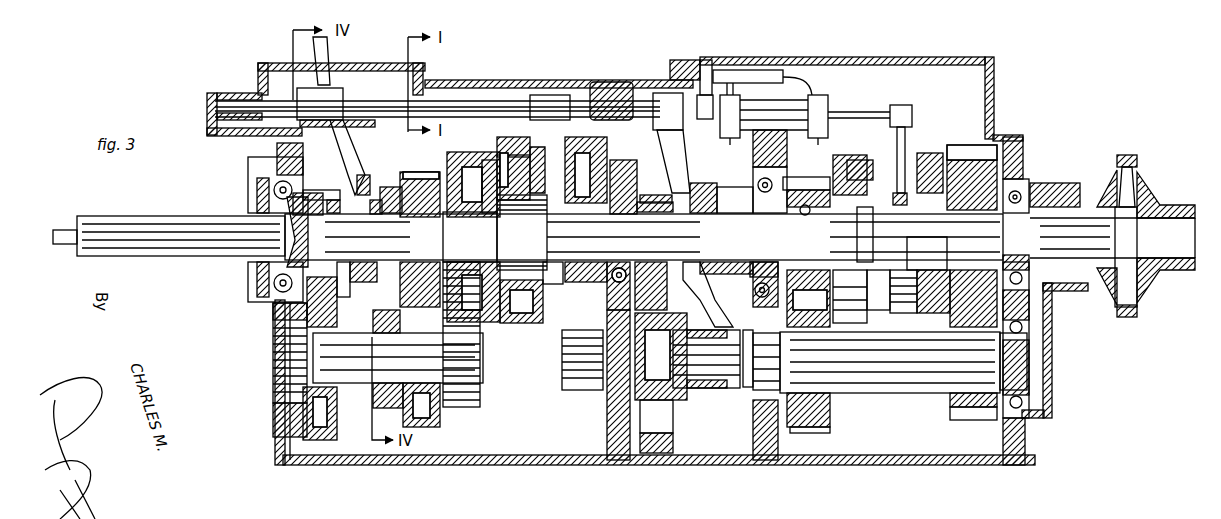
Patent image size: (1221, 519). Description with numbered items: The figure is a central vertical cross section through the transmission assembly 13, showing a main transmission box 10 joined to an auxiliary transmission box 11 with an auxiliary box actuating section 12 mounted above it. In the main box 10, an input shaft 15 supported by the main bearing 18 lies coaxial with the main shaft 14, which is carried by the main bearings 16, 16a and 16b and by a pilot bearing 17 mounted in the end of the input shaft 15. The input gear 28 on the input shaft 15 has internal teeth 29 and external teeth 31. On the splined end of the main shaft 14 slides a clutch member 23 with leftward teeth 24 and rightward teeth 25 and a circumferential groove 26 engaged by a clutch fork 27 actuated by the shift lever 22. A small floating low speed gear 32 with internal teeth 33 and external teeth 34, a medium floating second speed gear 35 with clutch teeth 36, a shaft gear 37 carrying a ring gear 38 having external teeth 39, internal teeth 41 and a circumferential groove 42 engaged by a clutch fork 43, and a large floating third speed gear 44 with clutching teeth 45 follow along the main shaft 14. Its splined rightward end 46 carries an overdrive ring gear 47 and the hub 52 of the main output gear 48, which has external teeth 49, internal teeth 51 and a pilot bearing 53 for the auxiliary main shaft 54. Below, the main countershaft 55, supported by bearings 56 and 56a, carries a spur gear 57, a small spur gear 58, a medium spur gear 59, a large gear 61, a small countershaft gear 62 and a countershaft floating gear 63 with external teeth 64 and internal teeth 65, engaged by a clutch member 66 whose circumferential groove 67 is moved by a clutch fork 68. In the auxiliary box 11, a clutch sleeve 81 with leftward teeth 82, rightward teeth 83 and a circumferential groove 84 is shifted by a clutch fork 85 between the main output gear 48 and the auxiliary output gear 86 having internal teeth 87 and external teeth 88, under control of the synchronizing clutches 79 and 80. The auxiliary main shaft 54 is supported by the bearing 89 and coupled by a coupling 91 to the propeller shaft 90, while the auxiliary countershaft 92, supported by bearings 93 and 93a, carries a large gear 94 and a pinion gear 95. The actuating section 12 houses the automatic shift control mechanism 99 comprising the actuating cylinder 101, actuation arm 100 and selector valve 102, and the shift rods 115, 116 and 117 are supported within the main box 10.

The main transmission box 10 is at (282, 460).
The auxiliary transmission box 11 is at (1025, 453).
The auxiliary box actuating section 12 is at (1003, 60).
The transmission assembly 13 is at (257, 382).
The main shaft 14 is at (644, 237).
The input shaft 15 is at (197, 260).
The main bearing 16 is at (623, 163).
The main bearing 16a is at (703, 183).
The main bearing 16b is at (772, 173).
The pilot bearing 17 is at (317, 193).
The main bearing 18 is at (263, 290).
The shift lever 22 is at (313, 48).
The clutch member 23 is at (353, 280).
The leftward teeth 24 is at (347, 278).
The rightward teeth 25 is at (377, 207).
The circumferential groove 26 is at (365, 270).
The clutch fork 27 is at (352, 153).
The input gear 28 is at (258, 198).
The internal teeth 29 is at (333, 200).
The external teeth 31 is at (312, 190).
The small floating low speed gear 32 is at (430, 167).
The internal teeth 33 is at (393, 193).
The external teeth 34 is at (413, 173).
The medium floating second speed gear 35 is at (463, 152).
The clutch teeth 36 is at (487, 270).
The shaft gear 37 is at (548, 220).
The ring gear 38 is at (500, 130).
The external teeth 39 is at (518, 143).
The internal teeth 41 is at (493, 180).
The circumferential groove 42 is at (528, 287).
The clutch fork 43 is at (535, 153).
The large floating third speed gear 44 is at (578, 132).
The clutching teeth 45 is at (553, 280).
The rightward end of main shaft 46 is at (723, 230).
The overdrive ring gear 47 is at (650, 197).
The main output gear 48 is at (822, 170).
The external teeth 49 is at (802, 183).
The internal teeth 51 is at (830, 290).
The hub 52 is at (720, 277).
The pilot bearing 53 is at (807, 195).
The auxiliary main shaft 54 is at (1093, 245).
The main countershaft 55 is at (362, 370).
The bearing 56 is at (287, 340).
The bearing 56a is at (613, 403).
The spur gear 57 is at (323, 430).
The small spur gear 58 is at (387, 393).
The medium spur gear 59 is at (418, 413).
The large gear 61 is at (462, 393).
The small countershaft gear 62 is at (573, 383).
The countershaft floating gear 63 is at (653, 452).
The external teeth 64 is at (667, 453).
The internal teeth 65 is at (697, 390).
The clutch member 66 is at (727, 393).
The circumferential groove 67 is at (720, 390).
The clutch fork 68 is at (668, 150).
The synchronizing clutch 79 is at (850, 320).
The synchronizing clutch 80 is at (933, 153).
The clutch sleeve 81 is at (887, 277).
The leftward teeth 82 is at (867, 177).
The rightward teeth 83 is at (943, 283).
The circumferential groove 84 is at (900, 270).
The clutch fork 85 is at (897, 133).
The auxiliary output gear 86 is at (975, 142).
The internal teeth 87 is at (953, 187).
The external teeth 88 is at (997, 137).
The bearing 89 is at (1028, 188).
The propeller shaft 90 is at (1177, 203).
The coupling 91 is at (1135, 153).
The auxiliary countershaft 92 is at (902, 373).
The bearing 93 is at (777, 403).
The bearing 93a is at (1028, 325).
The large gear 94 is at (822, 437).
The pinion gear 95 is at (968, 417).
The automatic shift control mechanism 99 is at (833, 95).
The actuation arm 100 is at (860, 113).
The double acting actuating cylinder 101 is at (795, 102).
The two-way selector valve 102 is at (755, 70).
The shift rod 115 is at (447, 100).
The shift rod 116 is at (518, 100).
The shift rod 117 is at (707, 95).